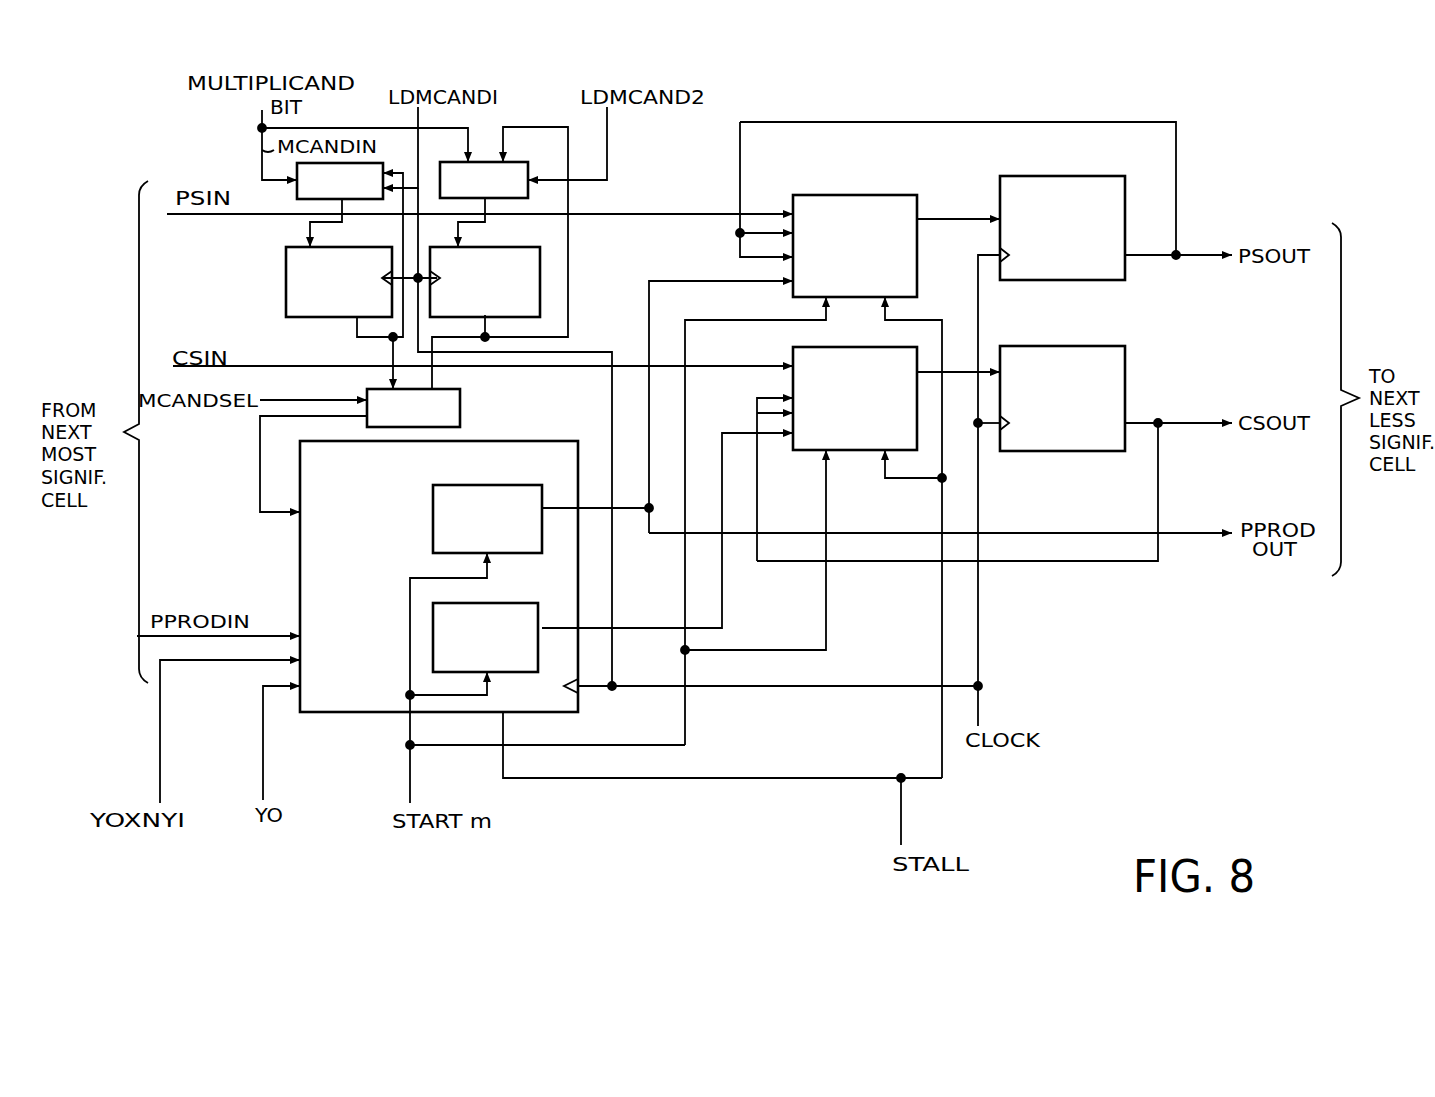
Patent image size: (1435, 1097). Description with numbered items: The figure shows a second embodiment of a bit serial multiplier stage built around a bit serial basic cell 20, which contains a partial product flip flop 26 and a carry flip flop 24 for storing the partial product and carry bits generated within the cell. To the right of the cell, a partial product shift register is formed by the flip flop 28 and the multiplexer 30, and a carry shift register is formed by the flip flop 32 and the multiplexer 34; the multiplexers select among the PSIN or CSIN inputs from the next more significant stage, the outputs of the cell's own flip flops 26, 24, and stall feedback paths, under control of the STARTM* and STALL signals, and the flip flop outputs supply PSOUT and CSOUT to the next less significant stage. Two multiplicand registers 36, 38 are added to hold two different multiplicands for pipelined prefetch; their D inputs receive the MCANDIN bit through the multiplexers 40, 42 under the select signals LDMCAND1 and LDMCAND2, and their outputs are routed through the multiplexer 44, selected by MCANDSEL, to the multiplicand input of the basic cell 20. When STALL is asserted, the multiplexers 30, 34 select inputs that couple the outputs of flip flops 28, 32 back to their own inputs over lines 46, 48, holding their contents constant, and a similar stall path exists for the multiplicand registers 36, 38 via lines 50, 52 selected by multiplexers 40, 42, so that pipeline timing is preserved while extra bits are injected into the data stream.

The bit serial basic cell 20 is at (340, 712).
The carry flip flop 24 is at (520, 603).
The partial product flip flop 26 is at (433, 540).
The partial product shift register flip flop 28 is at (1066, 176).
The partial product multiplexer 30 is at (860, 195).
The carry shift register flip flop 32 is at (1076, 346).
The carry multiplexer 34 is at (838, 347).
The first multiplicand register 36 is at (322, 317).
The second multiplicand register 38 is at (494, 247).
The first multiplicand input multiplexer 40 is at (297, 195).
The second multiplicand input multiplexer 42 is at (450, 150).
The multiplicand select multiplexer 44 is at (460, 405).
The partial product stall feedback line 46 is at (1176, 143).
The carry stall feedback line 48 is at (1158, 561).
The first multiplicand stall path 50 is at (395, 170).
The second multiplicand stall path 52 is at (548, 127).